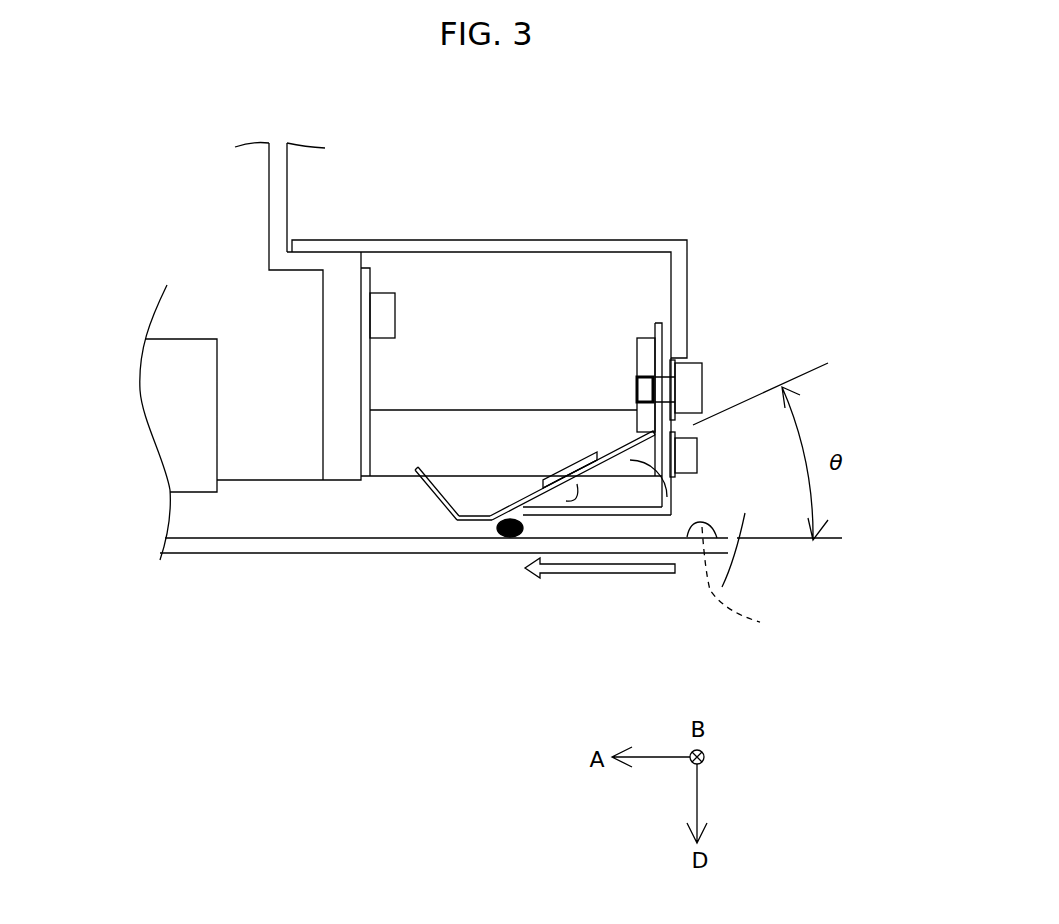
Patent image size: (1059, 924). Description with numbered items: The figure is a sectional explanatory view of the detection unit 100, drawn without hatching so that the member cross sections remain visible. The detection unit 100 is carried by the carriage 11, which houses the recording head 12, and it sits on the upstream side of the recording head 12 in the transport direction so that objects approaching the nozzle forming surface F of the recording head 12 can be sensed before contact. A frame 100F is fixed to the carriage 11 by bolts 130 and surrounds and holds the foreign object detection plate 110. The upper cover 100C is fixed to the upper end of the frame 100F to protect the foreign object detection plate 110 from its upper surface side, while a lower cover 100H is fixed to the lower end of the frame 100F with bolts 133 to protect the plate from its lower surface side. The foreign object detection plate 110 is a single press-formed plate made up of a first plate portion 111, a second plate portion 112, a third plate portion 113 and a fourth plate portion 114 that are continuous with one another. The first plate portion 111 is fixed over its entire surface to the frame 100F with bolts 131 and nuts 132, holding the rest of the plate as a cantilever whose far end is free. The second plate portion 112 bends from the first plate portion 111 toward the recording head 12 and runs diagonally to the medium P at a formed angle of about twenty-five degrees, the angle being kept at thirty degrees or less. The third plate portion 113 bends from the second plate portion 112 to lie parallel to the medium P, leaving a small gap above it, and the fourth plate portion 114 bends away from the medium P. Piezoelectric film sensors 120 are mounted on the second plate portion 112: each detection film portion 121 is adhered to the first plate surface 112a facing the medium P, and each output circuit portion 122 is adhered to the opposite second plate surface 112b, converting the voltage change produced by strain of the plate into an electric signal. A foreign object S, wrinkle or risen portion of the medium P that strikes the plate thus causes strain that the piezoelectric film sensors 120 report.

The detection unit 100 is at (514, 345).
The upper cover 100C is at (600, 240).
The frame 100F is at (400, 432).
The lower cover 100H is at (637, 515).
The carriage 11 is at (337, 273).
The recording head 12 is at (177, 430).
The foreign object detection plate 110 is at (572, 540).
The first plate portion 111 is at (627, 453).
The second plate portion 112 is at (630, 509).
The first plate surface 112a is at (667, 497).
The second plate surface 112b is at (577, 487).
The third plate portion 113 is at (475, 520).
The fourth plate portion 114 is at (422, 518).
The piezoelectric film sensor 120 is at (514, 406).
The detection film portion 121 is at (543, 487).
The output circuit portion 122 is at (552, 429).
The bolt 130 is at (397, 293).
The bolt 131 is at (702, 373).
The nut 132 is at (650, 367).
The bolt 133 is at (697, 458).
The foreign object S is at (500, 520).
The medium P is at (685, 545).
The nozzle forming surface F is at (190, 493).